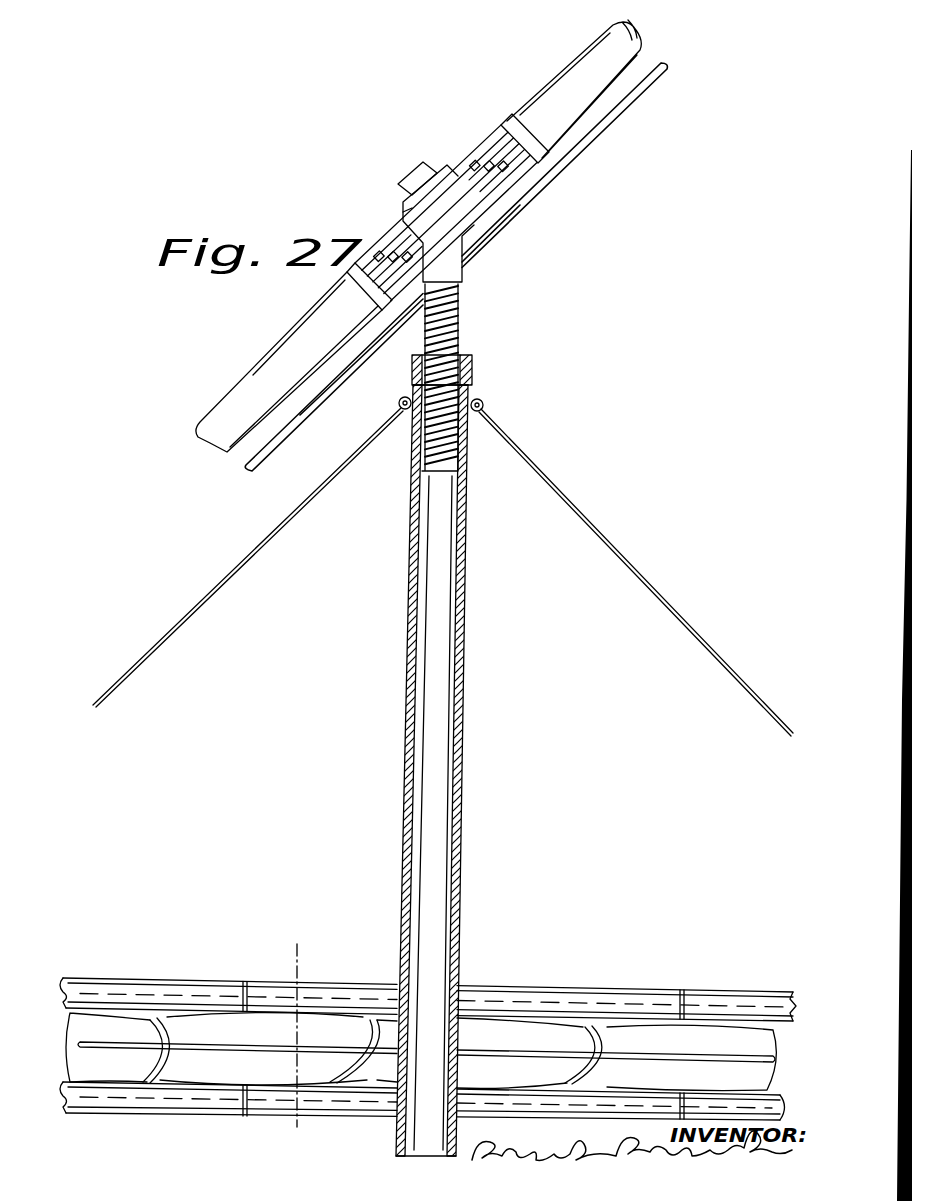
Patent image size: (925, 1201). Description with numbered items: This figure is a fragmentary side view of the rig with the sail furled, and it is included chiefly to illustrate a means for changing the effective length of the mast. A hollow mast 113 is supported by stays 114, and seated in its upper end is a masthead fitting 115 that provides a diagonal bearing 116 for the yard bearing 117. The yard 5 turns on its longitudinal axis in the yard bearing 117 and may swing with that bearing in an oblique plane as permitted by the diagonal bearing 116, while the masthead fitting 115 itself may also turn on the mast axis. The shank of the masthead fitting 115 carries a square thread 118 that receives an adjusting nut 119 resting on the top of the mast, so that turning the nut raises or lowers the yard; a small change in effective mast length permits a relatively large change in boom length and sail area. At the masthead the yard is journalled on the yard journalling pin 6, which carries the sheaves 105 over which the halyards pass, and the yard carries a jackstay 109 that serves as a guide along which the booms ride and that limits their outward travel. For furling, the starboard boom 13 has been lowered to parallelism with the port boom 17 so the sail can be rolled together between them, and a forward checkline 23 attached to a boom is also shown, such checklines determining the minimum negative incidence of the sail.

The yard 5 is at (287, 338).
The yard journalling pin 6 is at (411, 172).
The starboard boom 13 is at (160, 980).
The port boom 17 is at (173, 1113).
The forward checkline 23 is at (303, 1036).
The sheave 105 is at (411, 207).
The jackstay 109 is at (582, 150).
The hollow mast 113 is at (464, 732).
The stay 114 is at (639, 572).
The masthead fitting 115 is at (466, 262).
The diagonal bearing 116 is at (481, 226).
The yard bearing 117 is at (483, 148).
The square thread 118 is at (463, 312).
The adjusting nut 119 is at (474, 360).